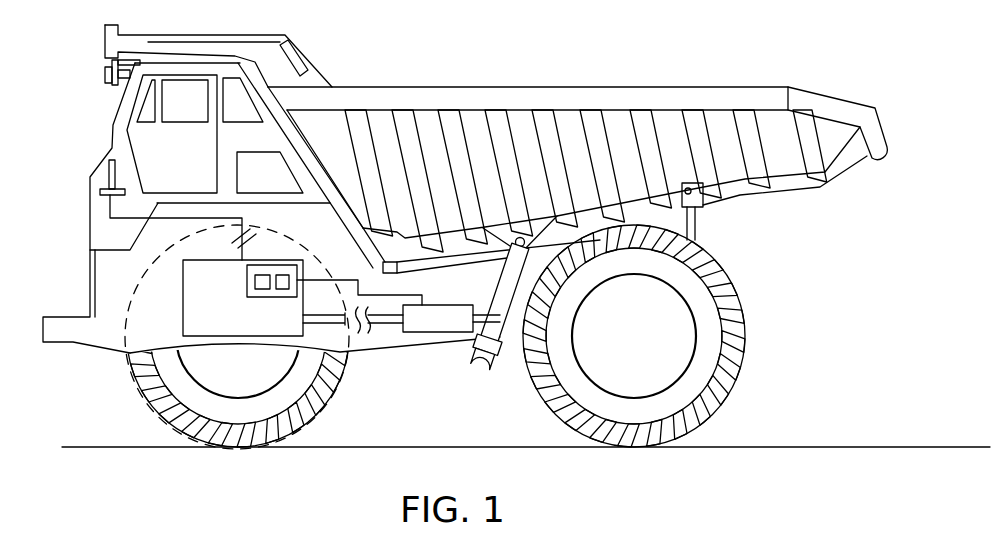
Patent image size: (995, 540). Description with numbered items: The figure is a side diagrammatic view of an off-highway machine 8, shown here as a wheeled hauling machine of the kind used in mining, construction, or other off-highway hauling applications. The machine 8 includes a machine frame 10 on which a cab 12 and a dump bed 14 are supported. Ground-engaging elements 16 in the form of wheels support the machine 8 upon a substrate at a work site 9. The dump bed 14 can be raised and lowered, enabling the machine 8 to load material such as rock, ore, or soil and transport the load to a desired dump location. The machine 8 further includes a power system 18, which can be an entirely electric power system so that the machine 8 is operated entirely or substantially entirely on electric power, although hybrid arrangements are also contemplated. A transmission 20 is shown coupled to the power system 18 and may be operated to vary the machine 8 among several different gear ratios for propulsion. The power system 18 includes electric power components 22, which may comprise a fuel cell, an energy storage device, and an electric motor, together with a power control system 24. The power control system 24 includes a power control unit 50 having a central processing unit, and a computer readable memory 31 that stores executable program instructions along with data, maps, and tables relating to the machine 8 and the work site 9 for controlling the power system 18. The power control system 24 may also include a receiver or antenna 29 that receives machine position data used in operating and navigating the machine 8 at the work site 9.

The off-highway machine 8 is at (866, 90).
The work site 9 is at (874, 446).
The machine frame 10 is at (403, 352).
The cab 12 is at (119, 110).
The dump bed 14 is at (577, 87).
The ground-engaging elements 16 is at (137, 390).
The power system 18 is at (168, 323).
The transmission 20 is at (460, 308).
The electric power components 22 is at (183, 300).
The power control system 24 is at (243, 303).
The receiver or antenna 29 is at (110, 170).
The computer readable memory 31 is at (264, 298).
The power control unit 50 is at (282, 274).